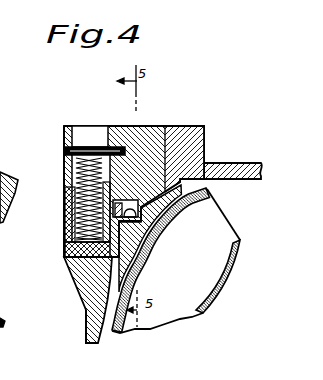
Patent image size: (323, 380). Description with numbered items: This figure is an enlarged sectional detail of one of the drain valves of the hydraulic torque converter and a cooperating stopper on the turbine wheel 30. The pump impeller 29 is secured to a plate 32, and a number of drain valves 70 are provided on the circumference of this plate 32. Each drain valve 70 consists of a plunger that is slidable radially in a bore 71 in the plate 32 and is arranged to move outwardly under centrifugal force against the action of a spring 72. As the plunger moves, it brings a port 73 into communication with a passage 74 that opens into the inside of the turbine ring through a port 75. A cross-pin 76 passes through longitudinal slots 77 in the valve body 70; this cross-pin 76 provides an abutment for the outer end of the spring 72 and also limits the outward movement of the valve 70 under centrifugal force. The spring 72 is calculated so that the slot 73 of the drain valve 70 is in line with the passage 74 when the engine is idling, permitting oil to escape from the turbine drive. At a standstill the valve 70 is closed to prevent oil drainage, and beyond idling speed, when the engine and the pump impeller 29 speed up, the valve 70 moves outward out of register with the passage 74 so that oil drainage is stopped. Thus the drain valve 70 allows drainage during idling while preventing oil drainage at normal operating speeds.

The pump impeller 29 is at (236, 163).
The turbine wheel 30 is at (211, 293).
The plate 32 is at (85, 320).
The drain valve 70 is at (67, 258).
The bore 71 is at (58, 127).
The spring 72 is at (91, 147).
The port 73 is at (67, 241).
The passage 74 is at (118, 200).
The port 75 is at (153, 233).
The cross-pin 76 is at (64, 149).
The longitudinal slots 77 is at (65, 177).